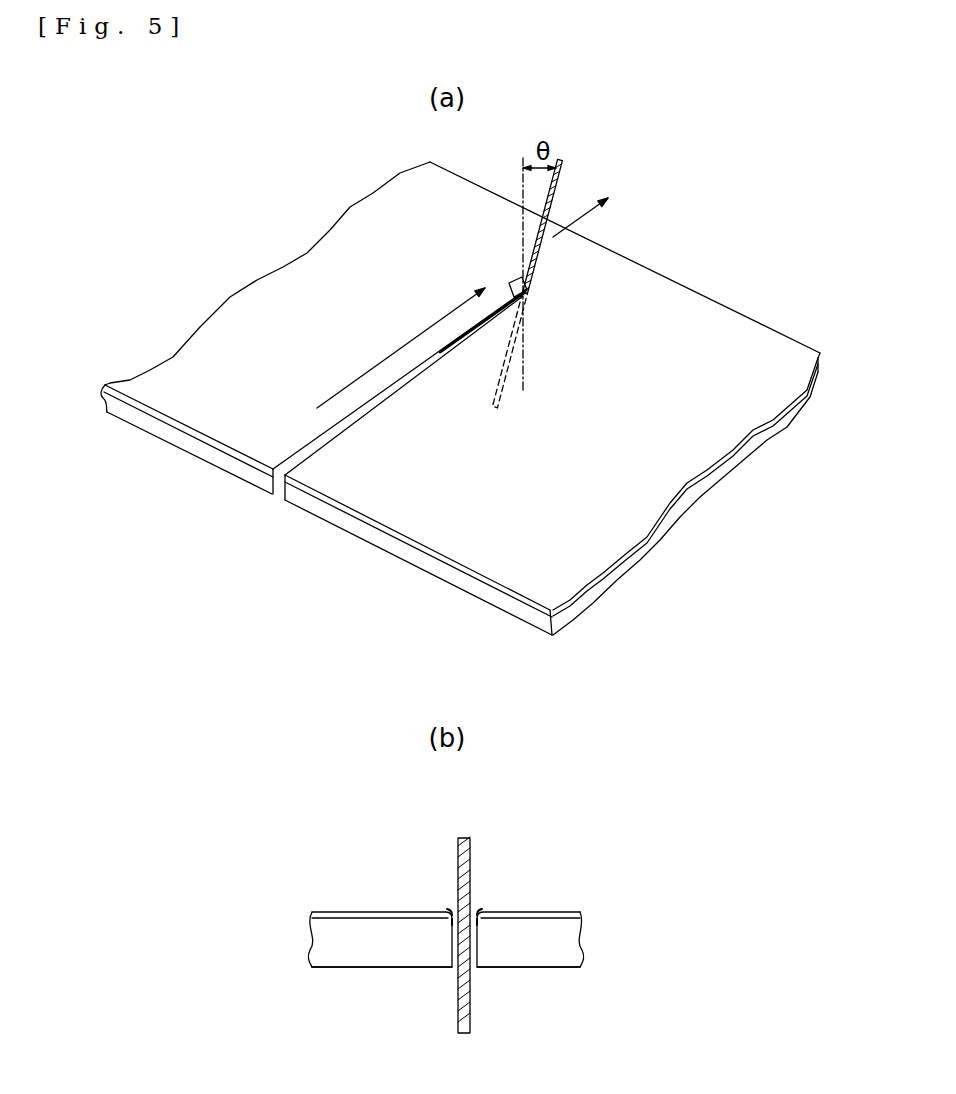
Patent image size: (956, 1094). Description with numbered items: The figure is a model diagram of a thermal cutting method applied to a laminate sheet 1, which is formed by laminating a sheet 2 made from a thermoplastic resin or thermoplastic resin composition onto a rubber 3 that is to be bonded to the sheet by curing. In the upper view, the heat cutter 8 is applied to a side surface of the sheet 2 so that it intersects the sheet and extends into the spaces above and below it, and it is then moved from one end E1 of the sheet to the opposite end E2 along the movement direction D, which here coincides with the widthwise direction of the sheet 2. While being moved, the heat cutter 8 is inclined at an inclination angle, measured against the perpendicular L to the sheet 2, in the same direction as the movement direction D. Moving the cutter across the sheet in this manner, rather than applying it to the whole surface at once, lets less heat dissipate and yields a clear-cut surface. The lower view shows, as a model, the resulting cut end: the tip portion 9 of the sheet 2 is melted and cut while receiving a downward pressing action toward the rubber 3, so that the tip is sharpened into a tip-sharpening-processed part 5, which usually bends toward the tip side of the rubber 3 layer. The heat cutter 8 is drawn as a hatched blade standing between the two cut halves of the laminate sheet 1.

The laminate sheet 1 is at (287, 282).
The sheet 2 is at (144, 407).
The rubber 3 is at (145, 423).
The tip-sharpening-processed part 5 is at (447, 908).
The heat cutter 8 is at (560, 181).
The tip portion 9 is at (448, 922).
The one end E1 is at (213, 455).
The opposite end E2 is at (722, 293).
The direction D is at (462, 306).
The perpendicular L is at (524, 374).